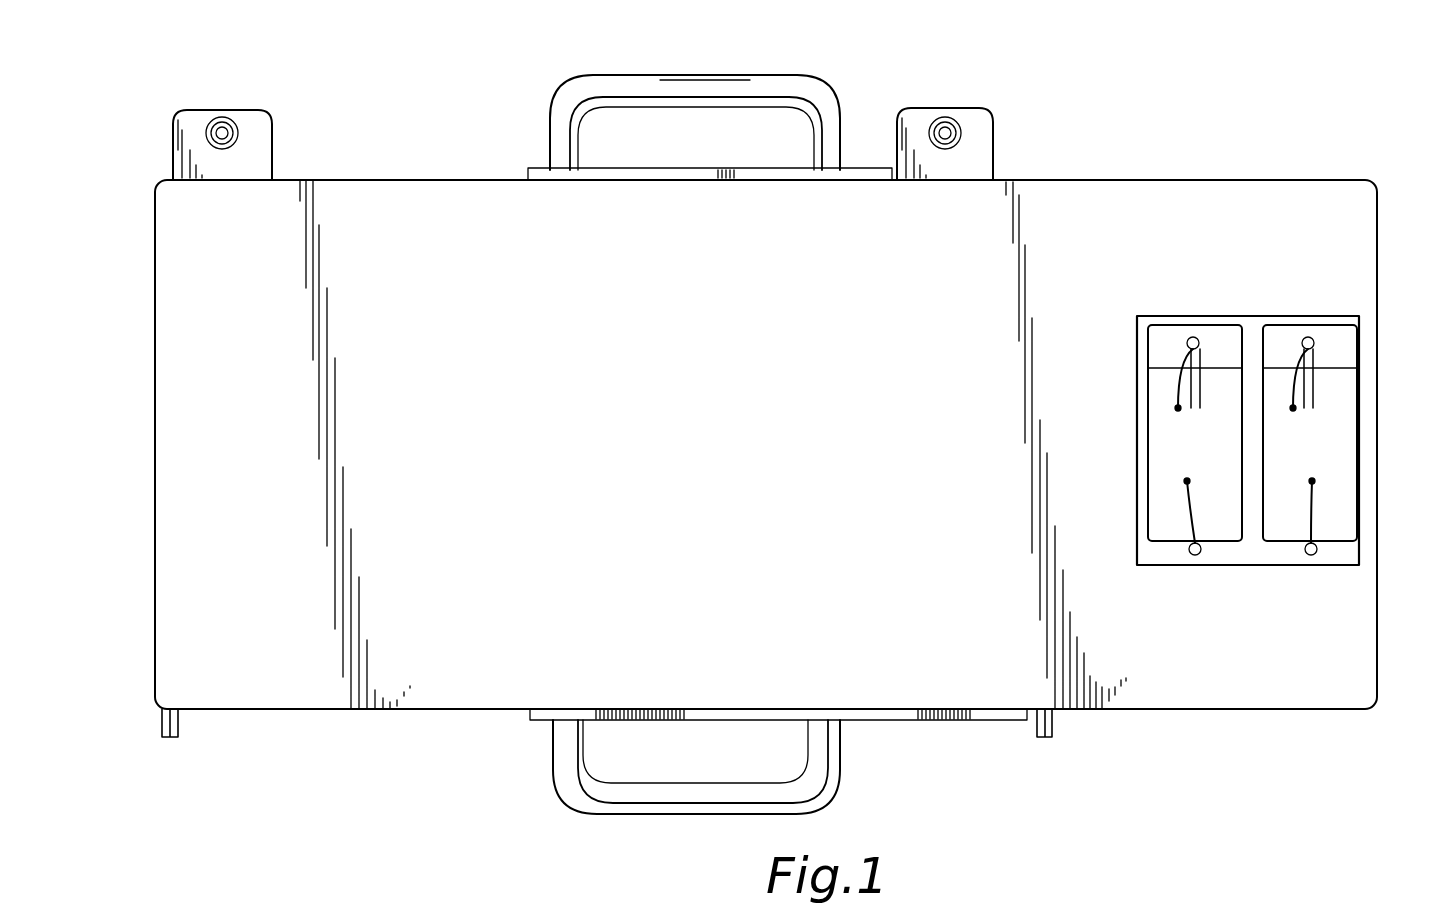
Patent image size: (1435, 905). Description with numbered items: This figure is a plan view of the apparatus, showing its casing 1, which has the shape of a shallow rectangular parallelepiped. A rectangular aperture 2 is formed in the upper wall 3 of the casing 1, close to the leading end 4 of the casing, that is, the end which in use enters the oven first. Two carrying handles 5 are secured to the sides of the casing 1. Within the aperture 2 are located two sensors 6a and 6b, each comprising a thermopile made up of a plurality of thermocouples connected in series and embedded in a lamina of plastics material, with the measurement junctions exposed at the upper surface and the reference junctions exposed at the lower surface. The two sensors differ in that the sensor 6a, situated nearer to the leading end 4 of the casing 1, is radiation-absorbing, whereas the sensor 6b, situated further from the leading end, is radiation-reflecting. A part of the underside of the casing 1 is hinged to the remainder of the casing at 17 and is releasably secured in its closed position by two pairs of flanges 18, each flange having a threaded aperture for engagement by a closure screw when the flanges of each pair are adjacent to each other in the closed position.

The casing 1 is at (1188, 166).
The rectangular aperture 2 is at (1252, 548).
The upper wall 3 is at (690, 428).
The leading end 4 is at (1378, 350).
The carrying handle 5 is at (706, 85).
The sensor 6a is at (1328, 447).
The sensor 6b is at (1168, 437).
The hinge 17 is at (160, 718).
The flange 18 is at (250, 128).